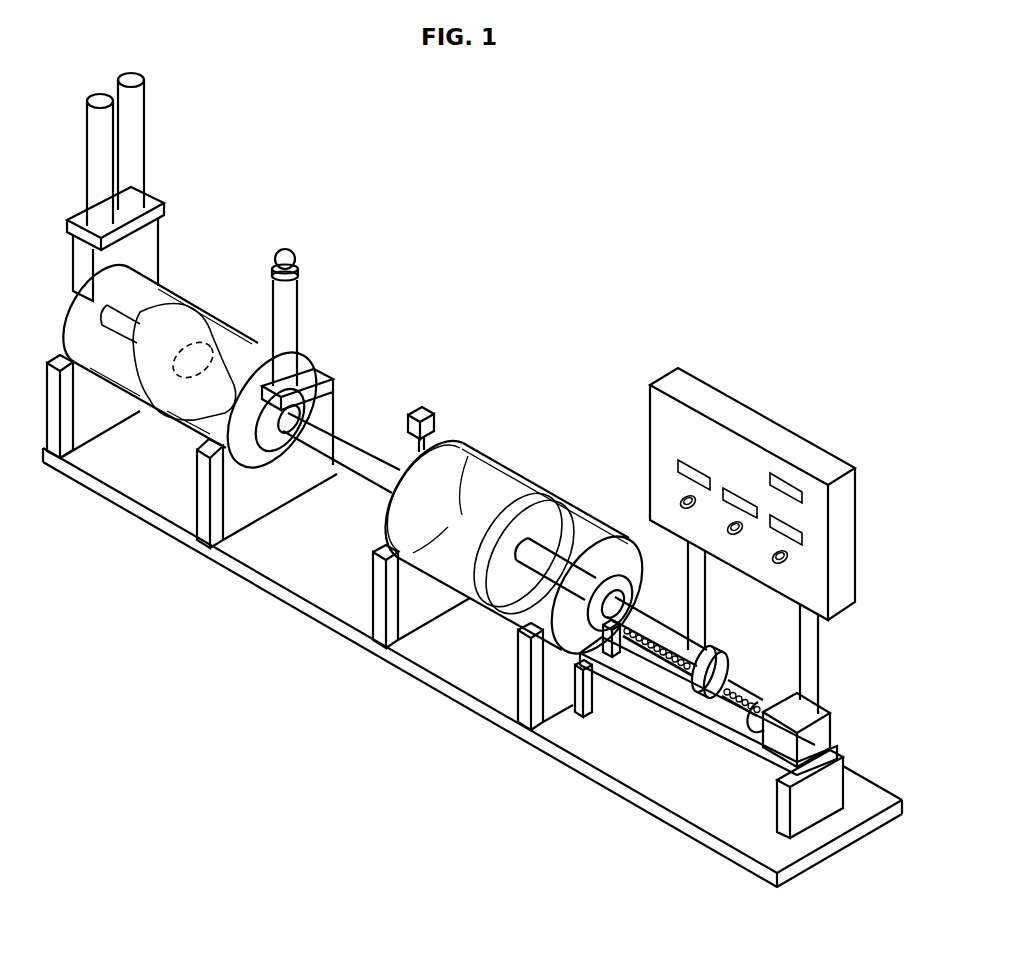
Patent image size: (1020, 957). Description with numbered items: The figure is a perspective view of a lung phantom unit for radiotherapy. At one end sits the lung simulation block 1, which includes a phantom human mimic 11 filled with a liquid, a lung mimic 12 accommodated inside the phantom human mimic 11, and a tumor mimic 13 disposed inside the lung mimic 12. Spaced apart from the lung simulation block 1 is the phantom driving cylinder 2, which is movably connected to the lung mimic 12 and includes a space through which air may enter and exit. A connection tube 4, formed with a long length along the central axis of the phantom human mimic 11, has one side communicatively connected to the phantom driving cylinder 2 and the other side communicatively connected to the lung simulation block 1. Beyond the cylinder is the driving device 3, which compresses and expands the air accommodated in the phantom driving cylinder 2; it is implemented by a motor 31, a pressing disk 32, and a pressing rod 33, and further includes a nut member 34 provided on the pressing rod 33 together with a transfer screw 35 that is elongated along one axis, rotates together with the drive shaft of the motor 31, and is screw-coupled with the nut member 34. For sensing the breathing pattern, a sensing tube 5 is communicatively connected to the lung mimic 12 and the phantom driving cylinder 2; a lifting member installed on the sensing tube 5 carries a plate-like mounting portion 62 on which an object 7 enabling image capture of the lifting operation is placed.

The lung simulation block 1 is at (198, 278).
The phantom human mimic 11 is at (186, 322).
The lung mimic 12 is at (188, 328).
The tumor mimic 13 is at (206, 346).
The object 7 is at (293, 253).
The mounting portion 62 is at (300, 265).
The sensing tube 5 is at (330, 289).
The connection tube 4 is at (362, 437).
The phantom driving cylinder 2 is at (489, 444).
The driving device 3 is at (607, 695).
The motor 31 is at (734, 798).
The pressing disk 32 is at (477, 587).
The pressing rod 33 is at (543, 565).
The nut member 34 is at (700, 690).
The transfer screw 35 is at (653, 657).